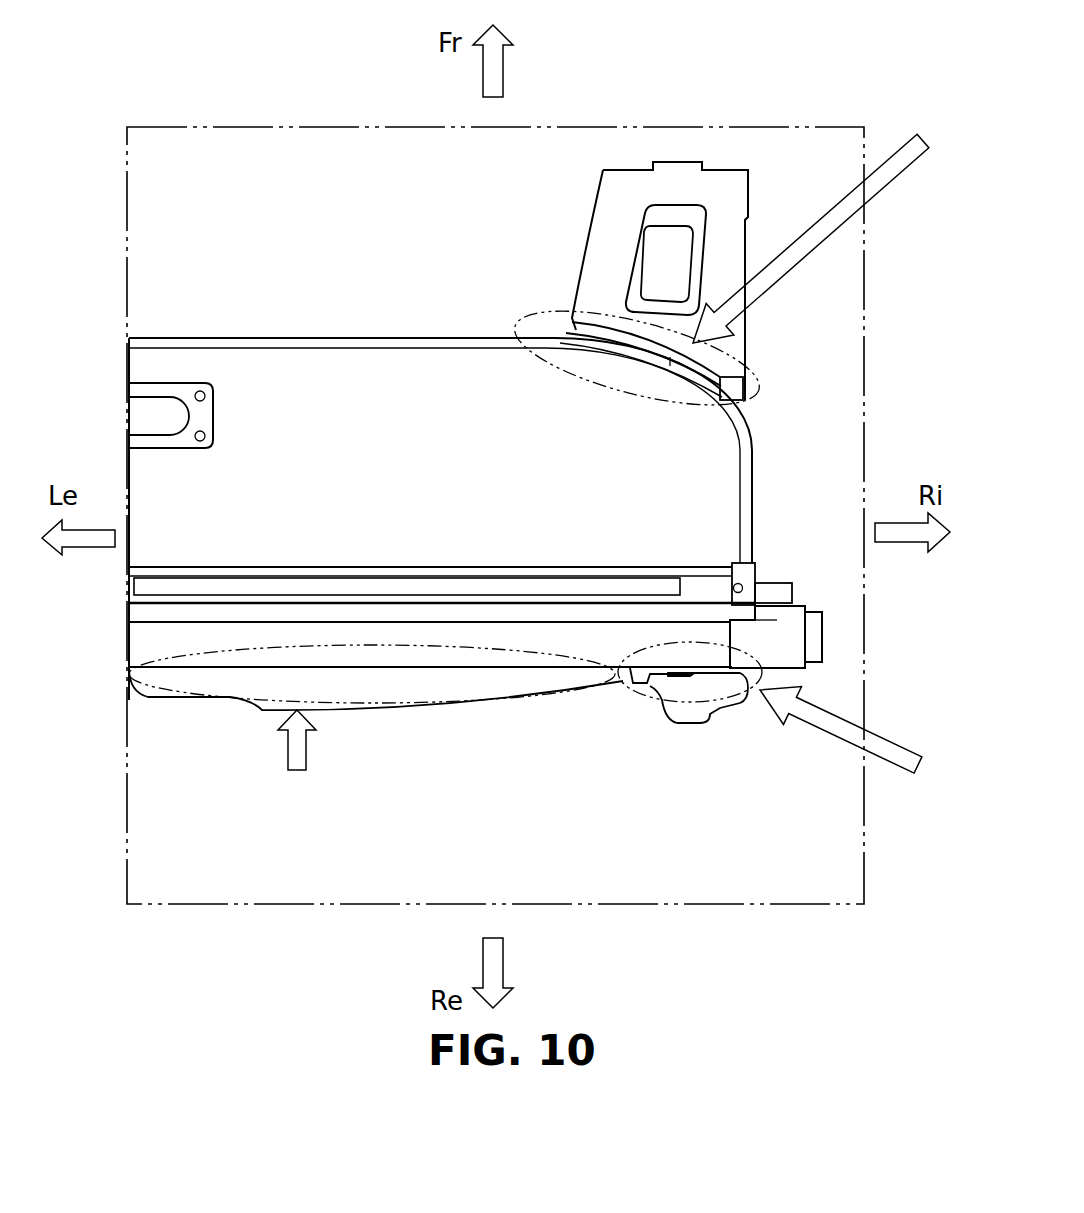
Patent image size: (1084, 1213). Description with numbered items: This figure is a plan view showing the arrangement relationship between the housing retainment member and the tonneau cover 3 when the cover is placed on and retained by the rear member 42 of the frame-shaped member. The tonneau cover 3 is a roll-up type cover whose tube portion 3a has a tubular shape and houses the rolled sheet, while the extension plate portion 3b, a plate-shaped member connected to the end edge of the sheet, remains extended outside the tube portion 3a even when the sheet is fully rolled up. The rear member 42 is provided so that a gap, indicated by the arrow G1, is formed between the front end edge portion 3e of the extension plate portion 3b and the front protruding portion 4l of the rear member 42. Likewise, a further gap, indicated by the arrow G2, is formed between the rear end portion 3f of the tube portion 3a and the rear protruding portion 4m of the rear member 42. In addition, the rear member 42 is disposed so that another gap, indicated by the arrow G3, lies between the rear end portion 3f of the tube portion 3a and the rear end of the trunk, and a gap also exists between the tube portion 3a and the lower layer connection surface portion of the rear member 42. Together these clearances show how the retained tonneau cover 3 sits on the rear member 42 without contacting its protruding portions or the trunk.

The tonneau cover 3 is at (925, 368).
The tube portion 3a is at (662, 632).
The extension plate portion 3b is at (682, 488).
The front end edge portion 3e is at (435, 330).
The rear end portion 3f is at (522, 682).
The rear member 42 is at (620, 200).
The front protruding portion 4l is at (727, 235).
The rear protruding portion 4m is at (699, 718).
The gap between front end edge portion and front protruding portion G1 is at (829, 227).
The gap between rear end portion and rear protruding portion G2 is at (861, 742).
The gap between rear end portion and trunk rear end G3 is at (300, 762).